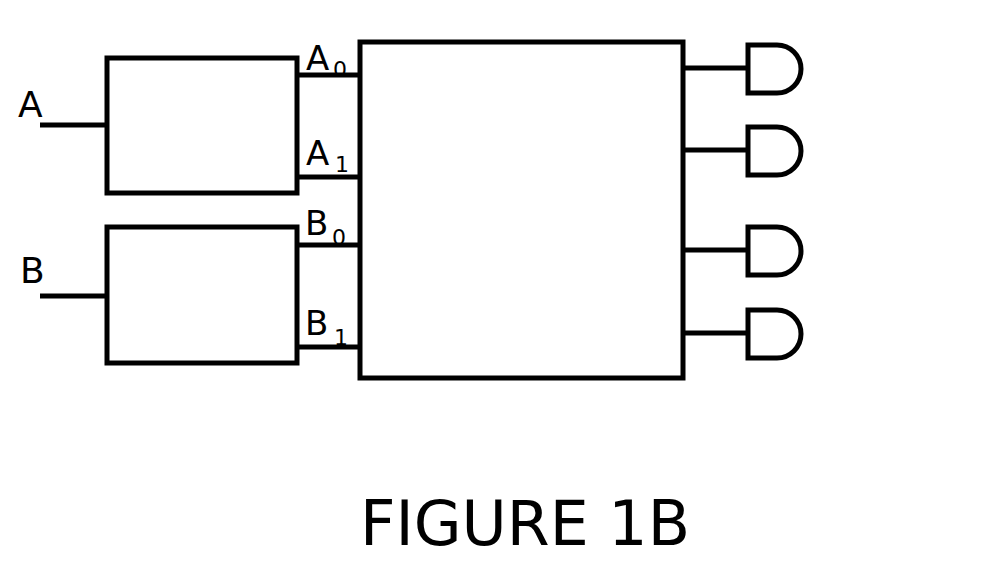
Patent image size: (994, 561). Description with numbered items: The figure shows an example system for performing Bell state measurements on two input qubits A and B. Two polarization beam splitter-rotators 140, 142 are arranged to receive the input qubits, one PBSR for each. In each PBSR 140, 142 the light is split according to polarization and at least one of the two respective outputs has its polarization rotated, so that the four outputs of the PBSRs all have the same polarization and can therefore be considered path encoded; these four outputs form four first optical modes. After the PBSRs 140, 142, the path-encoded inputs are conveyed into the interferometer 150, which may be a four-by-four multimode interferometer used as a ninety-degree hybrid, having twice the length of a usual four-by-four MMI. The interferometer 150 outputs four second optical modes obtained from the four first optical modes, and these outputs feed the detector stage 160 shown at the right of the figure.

The polarization beam splitter-rotator 140 is at (232, 144).
The polarization beam splitter-rotator 142 is at (232, 309).
The interferometer 150 is at (545, 225).
The output AND gates / outputs D1-D4 160 is at (800, 80).